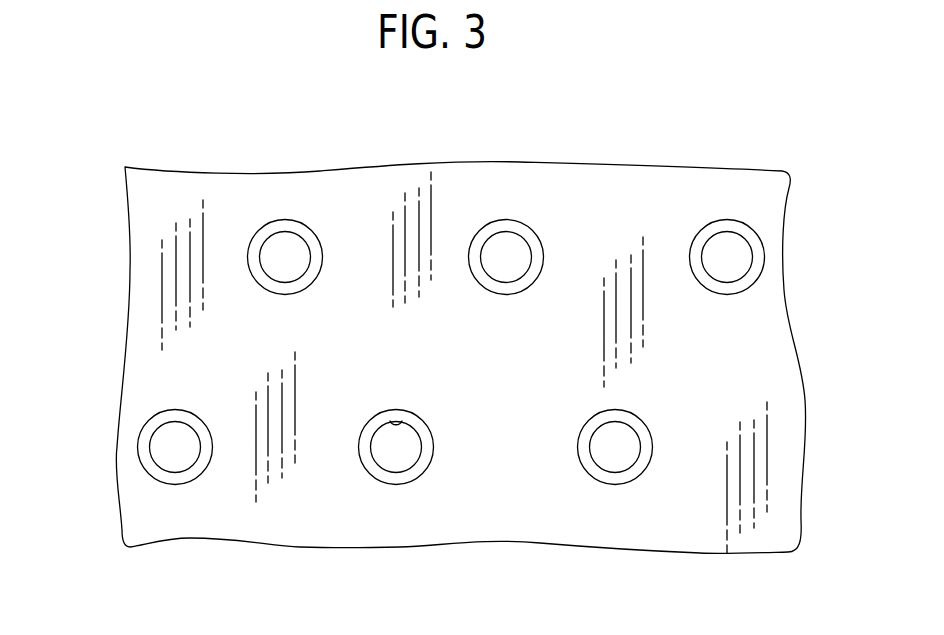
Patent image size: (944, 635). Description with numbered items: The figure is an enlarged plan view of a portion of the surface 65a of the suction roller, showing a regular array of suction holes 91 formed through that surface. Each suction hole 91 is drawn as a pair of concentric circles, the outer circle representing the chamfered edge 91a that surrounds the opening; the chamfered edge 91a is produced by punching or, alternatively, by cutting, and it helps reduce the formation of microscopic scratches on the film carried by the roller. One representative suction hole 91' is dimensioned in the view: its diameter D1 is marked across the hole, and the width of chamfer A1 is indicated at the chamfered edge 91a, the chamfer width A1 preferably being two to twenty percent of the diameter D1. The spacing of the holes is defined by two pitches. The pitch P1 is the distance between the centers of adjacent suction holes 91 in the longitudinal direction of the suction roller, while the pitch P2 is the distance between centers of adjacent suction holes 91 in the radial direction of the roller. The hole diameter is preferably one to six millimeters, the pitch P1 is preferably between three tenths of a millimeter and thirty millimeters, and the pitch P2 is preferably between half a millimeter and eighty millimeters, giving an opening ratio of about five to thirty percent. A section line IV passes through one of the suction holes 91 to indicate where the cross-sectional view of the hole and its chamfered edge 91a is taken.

The plate portion 65a is at (633, 217).
The suction hole 91 is at (570, 364).
The through hole 91' is at (393, 396).
The chamfered edge 91a is at (401, 422).
The diameter D1 is at (345, 498).
The width of chamfer A1 is at (383, 432).
The pitch P1 is at (175, 447).
The pitch P2 is at (55, 258).
The section line IV- IV is at (528, 383).